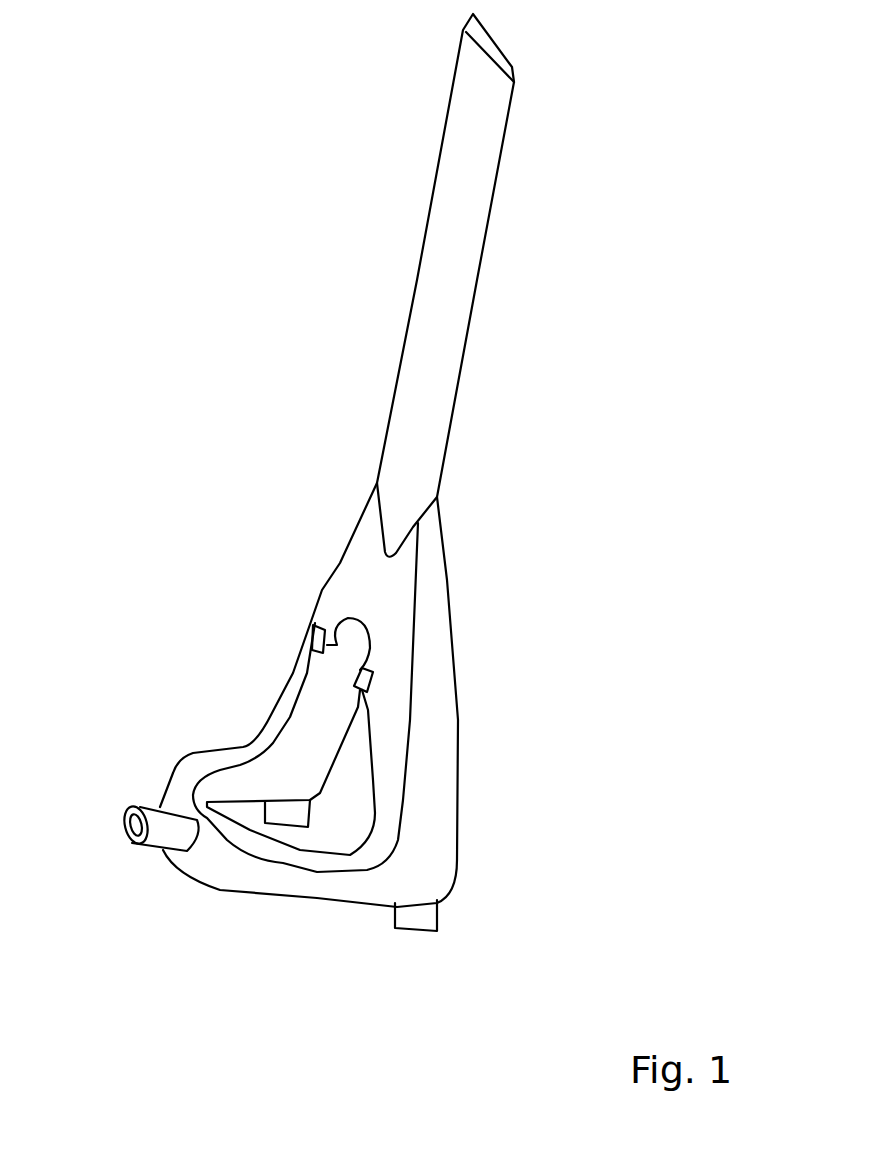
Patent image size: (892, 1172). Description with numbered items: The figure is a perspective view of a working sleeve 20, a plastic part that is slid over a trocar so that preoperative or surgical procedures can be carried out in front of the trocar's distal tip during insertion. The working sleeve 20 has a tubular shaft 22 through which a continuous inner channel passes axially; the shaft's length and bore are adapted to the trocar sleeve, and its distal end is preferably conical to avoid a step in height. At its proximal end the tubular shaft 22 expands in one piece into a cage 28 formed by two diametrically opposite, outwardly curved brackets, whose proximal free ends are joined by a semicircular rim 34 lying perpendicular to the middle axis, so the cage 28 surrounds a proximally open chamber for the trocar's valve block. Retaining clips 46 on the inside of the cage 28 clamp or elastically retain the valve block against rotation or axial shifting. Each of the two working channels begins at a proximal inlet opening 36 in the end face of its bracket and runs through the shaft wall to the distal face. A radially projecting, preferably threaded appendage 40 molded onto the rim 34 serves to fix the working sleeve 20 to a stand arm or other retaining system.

The working sleeve 20 is at (228, 452).
The tubular shaft 22 is at (453, 233).
The cage 28 is at (303, 740).
The rim 34 is at (228, 865).
The proximal inlet opening 36 is at (413, 920).
The appendage 40 is at (162, 830).
The retaining clips 46 is at (323, 641).